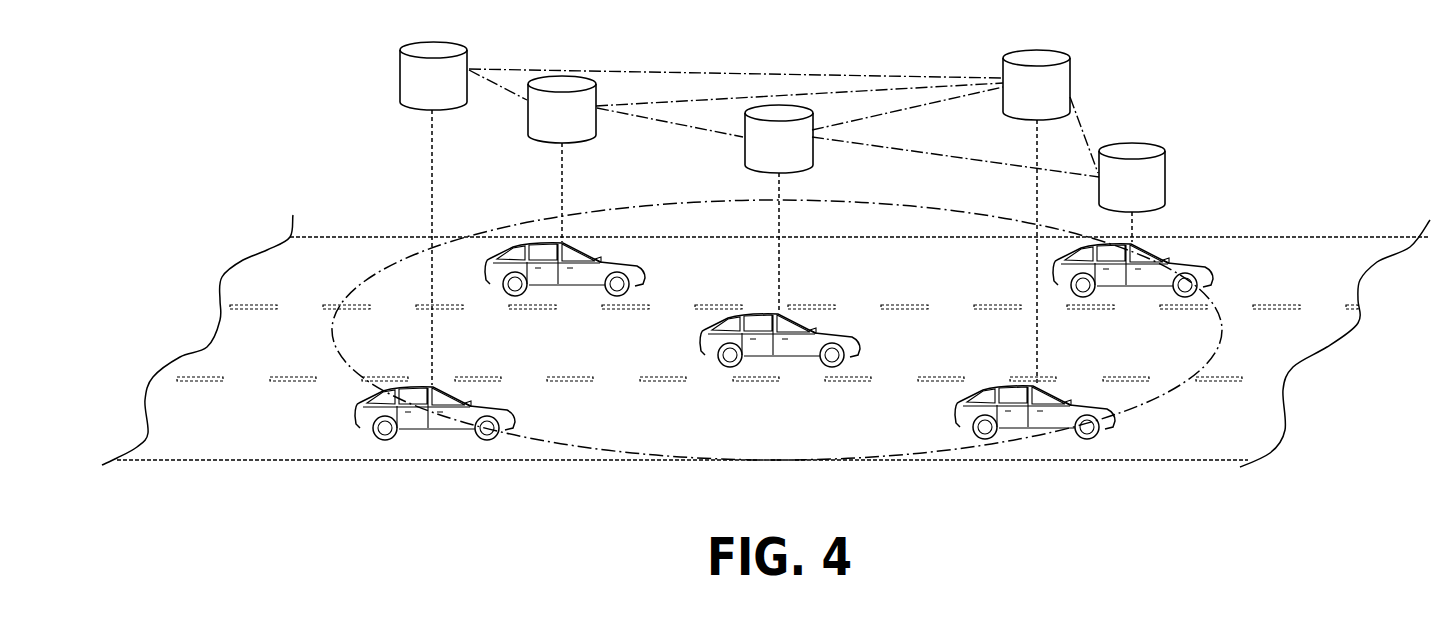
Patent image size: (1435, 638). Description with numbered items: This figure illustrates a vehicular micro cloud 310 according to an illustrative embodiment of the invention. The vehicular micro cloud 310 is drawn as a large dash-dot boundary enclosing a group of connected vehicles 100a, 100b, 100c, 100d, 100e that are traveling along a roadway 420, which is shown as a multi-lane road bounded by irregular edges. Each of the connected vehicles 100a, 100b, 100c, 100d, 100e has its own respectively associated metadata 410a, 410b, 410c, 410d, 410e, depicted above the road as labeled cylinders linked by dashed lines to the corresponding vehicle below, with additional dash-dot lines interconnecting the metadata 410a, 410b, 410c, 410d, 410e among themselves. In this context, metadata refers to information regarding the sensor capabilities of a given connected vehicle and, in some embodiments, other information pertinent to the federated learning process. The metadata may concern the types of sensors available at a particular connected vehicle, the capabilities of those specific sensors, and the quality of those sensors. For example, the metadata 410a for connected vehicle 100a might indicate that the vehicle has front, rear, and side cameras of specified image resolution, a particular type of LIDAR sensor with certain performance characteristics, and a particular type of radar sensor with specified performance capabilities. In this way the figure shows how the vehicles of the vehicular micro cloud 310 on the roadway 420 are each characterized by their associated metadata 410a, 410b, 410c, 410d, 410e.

The connected vehicle 100a is at (508, 408).
The connected vehicle 100b is at (1107, 407).
The connected vehicle 100c is at (1207, 270).
The connected vehicle 100d is at (847, 335).
The connected vehicle 100e is at (635, 265).
The vehicular micro cloud 310 is at (843, 198).
The metadata 410a is at (458, 89).
The metadata 410b is at (1062, 97).
The metadata 410c is at (1157, 191).
The metadata 410d is at (805, 152).
The metadata 410e is at (586, 122).
The roadway 420 is at (1335, 280).